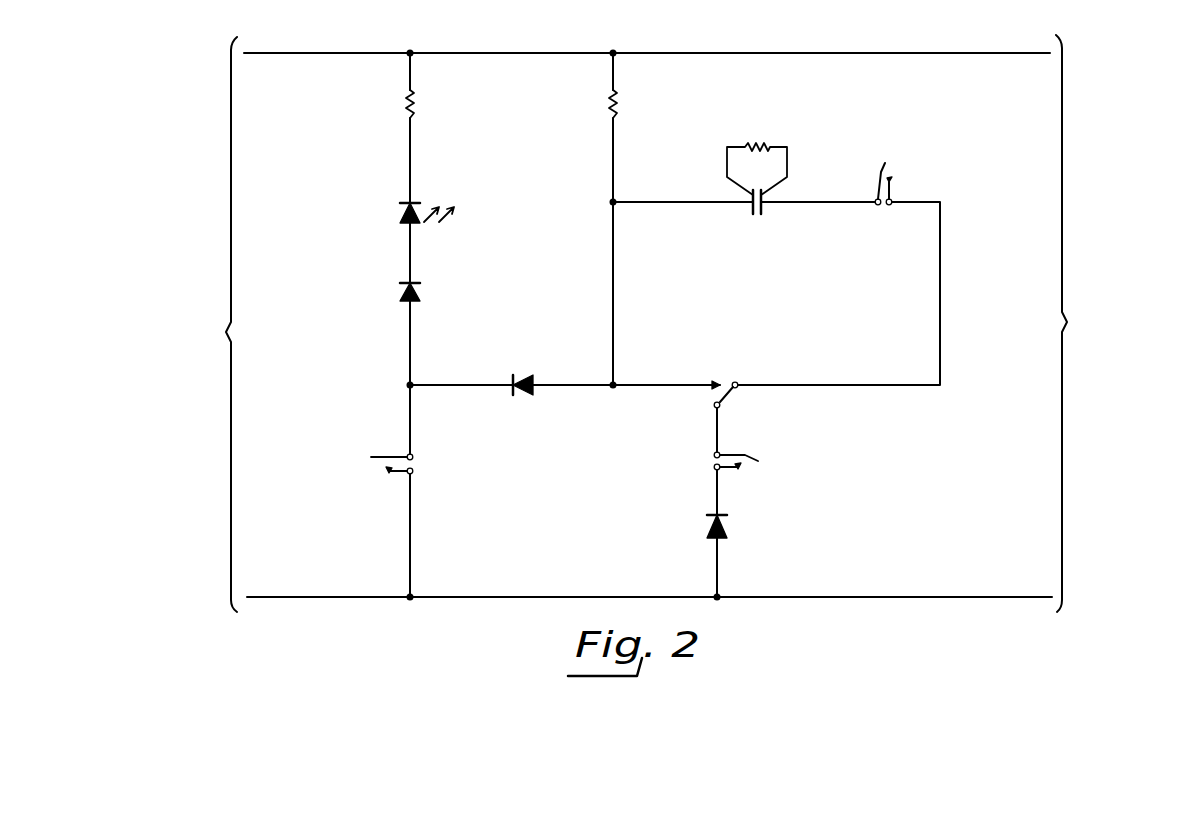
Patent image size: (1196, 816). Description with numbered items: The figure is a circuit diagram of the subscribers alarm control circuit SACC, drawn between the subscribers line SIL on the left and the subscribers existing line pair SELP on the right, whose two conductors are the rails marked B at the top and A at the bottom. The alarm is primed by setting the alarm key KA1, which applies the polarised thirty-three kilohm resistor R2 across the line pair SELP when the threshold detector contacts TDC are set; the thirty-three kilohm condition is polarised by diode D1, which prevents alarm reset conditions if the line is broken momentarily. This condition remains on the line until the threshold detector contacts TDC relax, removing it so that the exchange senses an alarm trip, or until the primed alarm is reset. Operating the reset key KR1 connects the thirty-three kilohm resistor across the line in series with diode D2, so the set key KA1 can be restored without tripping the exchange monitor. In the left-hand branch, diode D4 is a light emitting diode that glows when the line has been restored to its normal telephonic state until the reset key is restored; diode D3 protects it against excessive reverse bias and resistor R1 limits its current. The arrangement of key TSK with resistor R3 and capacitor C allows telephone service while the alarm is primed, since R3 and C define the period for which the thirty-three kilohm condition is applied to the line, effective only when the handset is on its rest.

The subscribers line SIL is at (168, 324).
The subscribers existing line pair SELP is at (1121, 323).
The line terminal A is at (649, 582).
The line terminal B is at (647, 39).
The resistor R1 is at (425, 104).
The 33 K ohm resistor R2 is at (634, 111).
The resistor R3 is at (757, 158).
The capacitor C is at (758, 213).
The diode D1 is at (733, 526).
The diode D2 is at (522, 395).
The diode D3 is at (427, 293).
The light emitting diode D4 is at (443, 213).
The reset key KR1 is at (365, 463).
The alarm key KA1 is at (757, 463).
The key TSK is at (884, 173).
The threshold detector contacts TDC is at (722, 385).
The subscribers alarm control circuit SACC is at (776, 295).